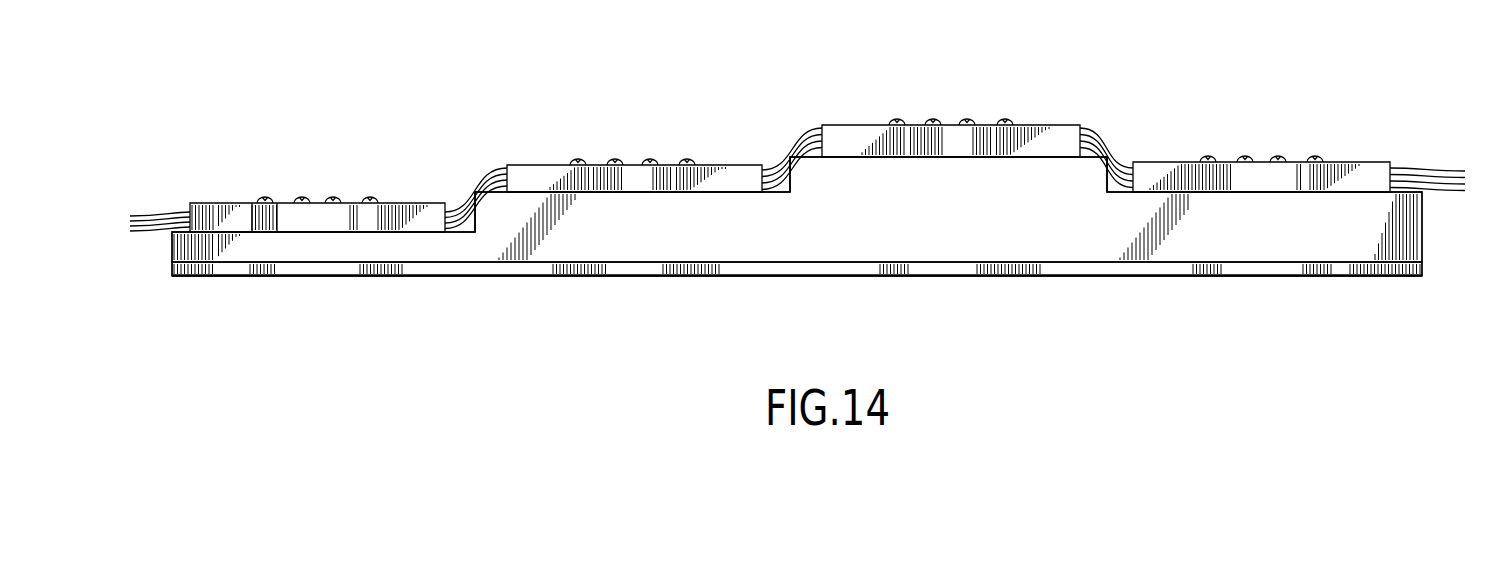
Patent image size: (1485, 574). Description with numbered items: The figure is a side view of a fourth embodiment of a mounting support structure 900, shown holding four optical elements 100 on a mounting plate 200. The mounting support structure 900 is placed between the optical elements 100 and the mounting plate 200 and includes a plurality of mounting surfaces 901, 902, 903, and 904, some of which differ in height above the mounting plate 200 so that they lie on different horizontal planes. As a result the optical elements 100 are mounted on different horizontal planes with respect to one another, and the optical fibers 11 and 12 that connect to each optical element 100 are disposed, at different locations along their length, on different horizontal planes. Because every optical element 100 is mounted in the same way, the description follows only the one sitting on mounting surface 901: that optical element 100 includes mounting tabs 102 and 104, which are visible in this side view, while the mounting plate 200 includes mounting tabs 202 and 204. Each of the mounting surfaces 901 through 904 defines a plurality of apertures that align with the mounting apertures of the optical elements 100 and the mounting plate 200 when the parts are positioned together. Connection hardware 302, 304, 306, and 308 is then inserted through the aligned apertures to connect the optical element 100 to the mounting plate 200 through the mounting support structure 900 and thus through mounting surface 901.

The optical element 100 is at (216, 203).
The optical fiber 11 is at (152, 213).
The optical fiber 12 is at (158, 232).
The mounting tab 102 is at (385, 220).
The mounting tab 104 is at (254, 213).
The connection hardware 302 is at (372, 198).
The connection hardware 304 is at (277, 203).
The connection hardware 306 is at (303, 198).
The connection hardware 308 is at (338, 198).
The mounting plate 200 is at (1437, 263).
The mounting tab 202 is at (367, 273).
The mounting tab 204 is at (263, 273).
The mounting support structure 900 is at (1425, 237).
The mounting surface 901 is at (319, 232).
The mounting surface 902 is at (625, 195).
The mounting surface 903 is at (948, 158).
The mounting surface 904 is at (1235, 193).